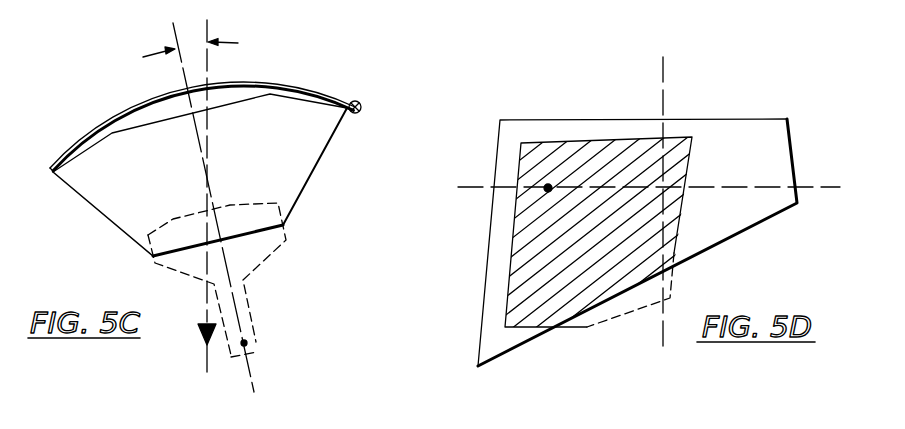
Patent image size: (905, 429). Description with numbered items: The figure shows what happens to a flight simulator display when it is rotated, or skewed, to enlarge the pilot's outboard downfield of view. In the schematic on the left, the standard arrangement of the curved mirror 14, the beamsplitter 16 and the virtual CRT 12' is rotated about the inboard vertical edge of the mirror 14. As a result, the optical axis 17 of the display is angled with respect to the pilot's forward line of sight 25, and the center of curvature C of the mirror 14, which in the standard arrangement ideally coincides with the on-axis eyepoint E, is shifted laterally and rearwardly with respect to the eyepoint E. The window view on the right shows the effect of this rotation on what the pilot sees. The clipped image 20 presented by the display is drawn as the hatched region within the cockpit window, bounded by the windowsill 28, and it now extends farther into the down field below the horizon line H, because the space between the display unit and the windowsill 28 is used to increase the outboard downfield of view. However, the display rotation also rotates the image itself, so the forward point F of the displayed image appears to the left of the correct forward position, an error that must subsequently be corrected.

In FIG. 5C, the mirror 14 is at (300, 83).
In FIG. 5C, the beamsplitter 16 is at (105, 193).
In FIG. 5C, the virtual CRT 12' is at (243, 280).
In FIG. 5C, the optical axis 17 is at (173, 35).
In FIG. 5C, the forward line of sight 25 is at (208, 32).
In FIG. 5C, the eyepoint E is at (200, 338).
In FIG. 5C, the center of curvature C is at (250, 348).
In FIG. 5D, the windowsill 28 is at (722, 118).
In FIG. 5D, the clipped image 20 is at (525, 280).
In FIG. 5D, the forward point F is at (549, 185).
In FIG. 5D, the horizon line H is at (822, 183).